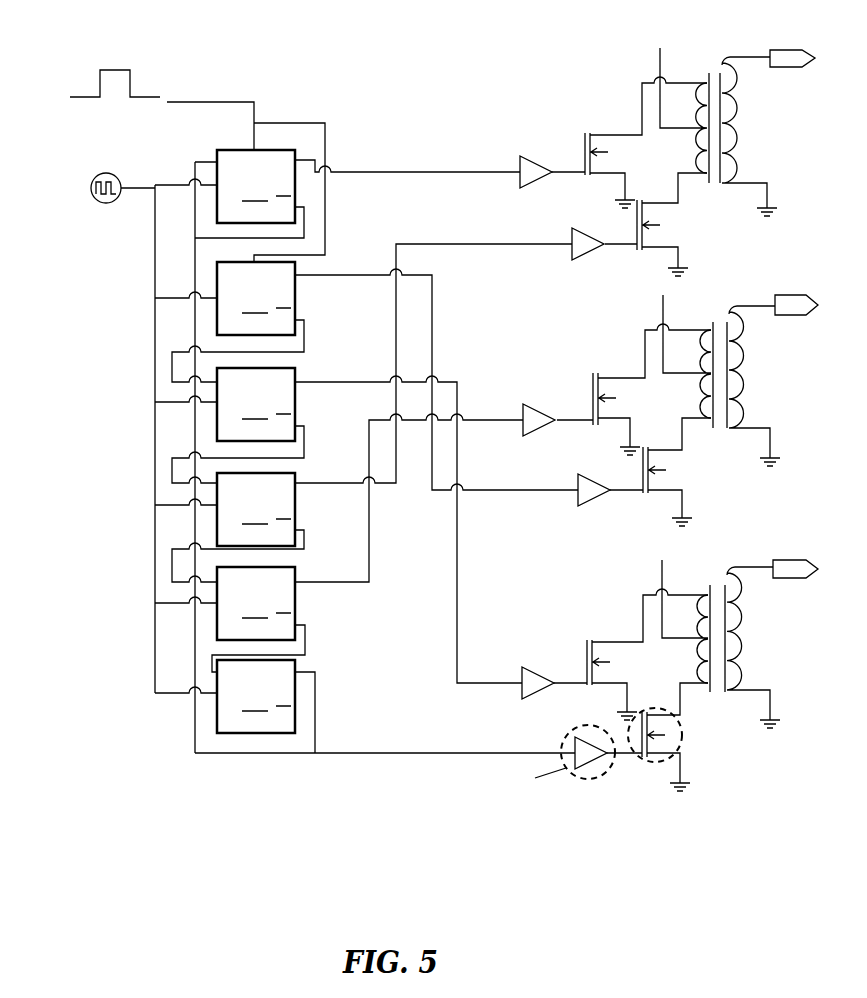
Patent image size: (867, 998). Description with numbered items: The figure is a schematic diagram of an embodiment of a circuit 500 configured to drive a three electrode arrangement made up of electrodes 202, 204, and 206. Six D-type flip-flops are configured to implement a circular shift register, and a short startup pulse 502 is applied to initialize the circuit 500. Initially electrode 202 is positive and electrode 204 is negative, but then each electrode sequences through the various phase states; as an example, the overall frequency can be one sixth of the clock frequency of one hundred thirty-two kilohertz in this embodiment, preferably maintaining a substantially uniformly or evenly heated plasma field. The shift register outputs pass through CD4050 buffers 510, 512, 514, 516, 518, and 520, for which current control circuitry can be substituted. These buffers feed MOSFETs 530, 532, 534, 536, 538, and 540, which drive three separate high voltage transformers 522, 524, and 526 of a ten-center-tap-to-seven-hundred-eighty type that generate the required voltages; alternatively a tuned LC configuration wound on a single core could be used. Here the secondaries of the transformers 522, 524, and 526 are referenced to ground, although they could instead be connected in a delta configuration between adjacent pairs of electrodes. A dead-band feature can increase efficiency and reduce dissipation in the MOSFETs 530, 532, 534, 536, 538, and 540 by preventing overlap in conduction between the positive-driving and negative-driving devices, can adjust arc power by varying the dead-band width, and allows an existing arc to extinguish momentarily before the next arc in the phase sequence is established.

The circuit 500 is at (442, 45).
The startup pulse 502 is at (181, 165).
The CD4050 buffer 510 is at (523, 165).
The CD4050 buffer 512 is at (583, 238).
The CD4050 buffer 514 is at (533, 410).
The CD4050 buffer 516 is at (577, 485).
The CD4050 buffer 518 is at (528, 682).
The CD4050 buffer 520 is at (580, 750).
The MOSFET 530 is at (626, 142).
The MOSFET 532 is at (652, 224).
The MOSFET 534 is at (630, 389).
The MOSFET 536 is at (654, 472).
The MOSFET 538 is at (630, 654).
The MOSFET 540 is at (657, 737).
The high voltage transformer 522 is at (706, 122).
The high voltage transformer 524 is at (693, 376).
The high voltage transformer 526 is at (693, 637).
The electrode 202 is at (801, 61).
The electrode 204 is at (810, 311).
The electrode 206 is at (808, 573).